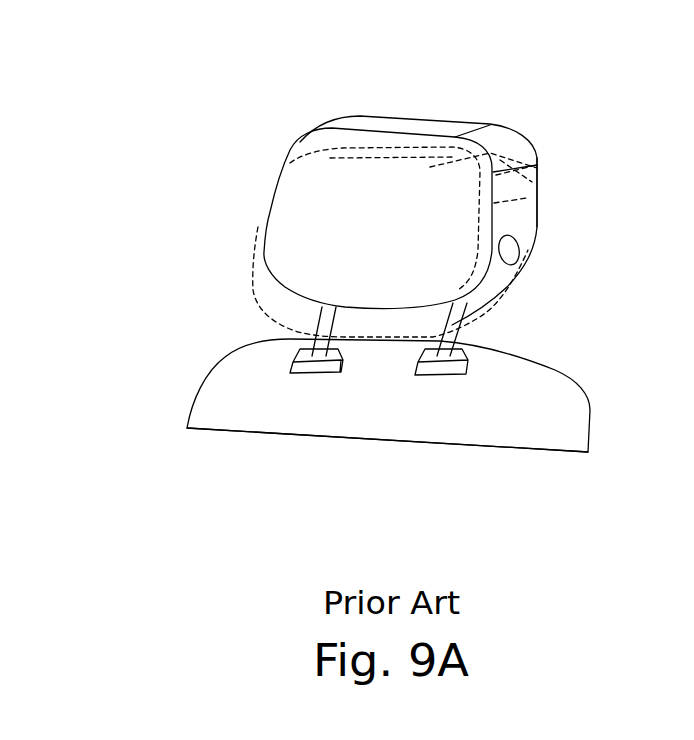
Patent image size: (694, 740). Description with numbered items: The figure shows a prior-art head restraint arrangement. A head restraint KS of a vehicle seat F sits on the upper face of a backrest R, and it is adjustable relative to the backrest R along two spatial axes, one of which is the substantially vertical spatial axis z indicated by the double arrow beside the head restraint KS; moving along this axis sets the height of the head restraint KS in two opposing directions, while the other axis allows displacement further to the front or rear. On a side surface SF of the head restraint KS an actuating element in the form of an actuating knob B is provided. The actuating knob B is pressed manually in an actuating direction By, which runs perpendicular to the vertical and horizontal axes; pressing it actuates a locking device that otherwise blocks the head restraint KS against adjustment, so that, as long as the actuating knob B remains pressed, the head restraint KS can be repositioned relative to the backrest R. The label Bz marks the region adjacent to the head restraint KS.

The head restraint KS is at (448, 104).
The spatial axis Z z is at (203, 130).
The vertical movement range Bz is at (412, 168).
The side surface SF is at (537, 190).
The actuating direction By is at (543, 260).
The actuating knob B is at (518, 255).
The vehicle seat F is at (196, 362).
The backrest R is at (505, 430).